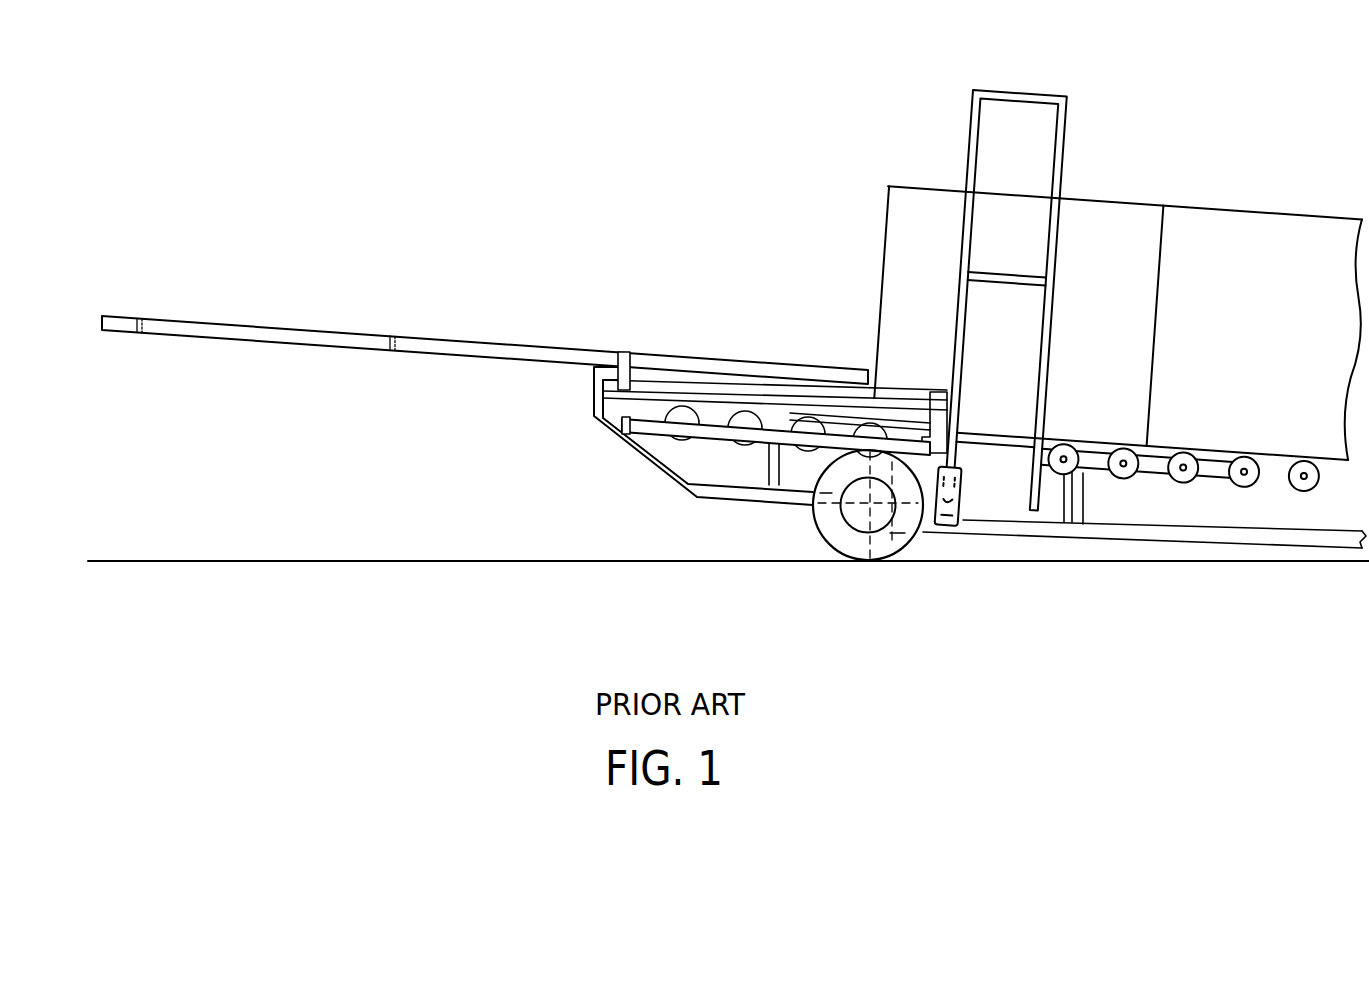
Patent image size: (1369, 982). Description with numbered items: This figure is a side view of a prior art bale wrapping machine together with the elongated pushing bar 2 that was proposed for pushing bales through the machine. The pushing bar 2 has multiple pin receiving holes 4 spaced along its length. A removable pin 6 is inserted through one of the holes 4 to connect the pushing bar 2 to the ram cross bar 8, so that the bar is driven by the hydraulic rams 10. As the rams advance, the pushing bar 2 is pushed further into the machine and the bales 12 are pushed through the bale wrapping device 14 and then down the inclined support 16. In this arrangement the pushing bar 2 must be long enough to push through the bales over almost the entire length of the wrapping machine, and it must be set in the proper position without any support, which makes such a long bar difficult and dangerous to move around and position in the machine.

The elongated pushing bar 2 is at (237, 339).
The pin receiving holes 4 is at (152, 322).
The removable pin 6 is at (637, 360).
The ram cross bar 8 is at (627, 352).
The hydraulic rams 10 is at (655, 427).
The bales 12 is at (940, 187).
The bale wrapping device 14 is at (1042, 92).
The inclined support 16 is at (1250, 492).